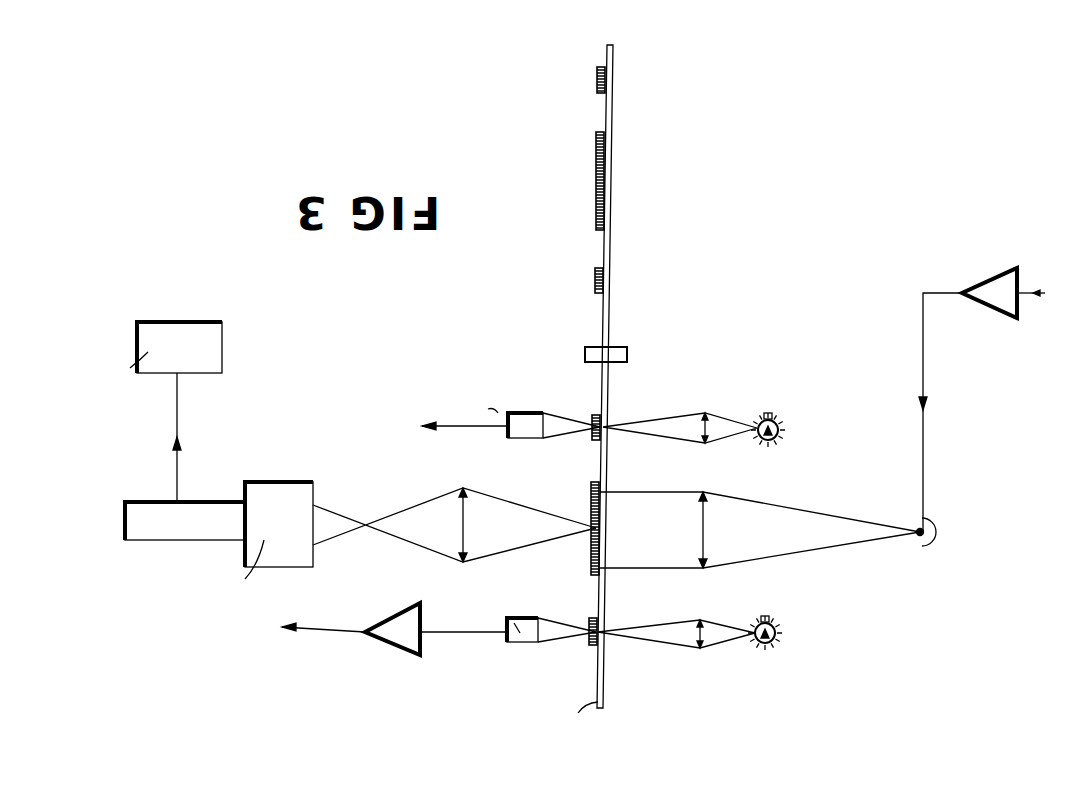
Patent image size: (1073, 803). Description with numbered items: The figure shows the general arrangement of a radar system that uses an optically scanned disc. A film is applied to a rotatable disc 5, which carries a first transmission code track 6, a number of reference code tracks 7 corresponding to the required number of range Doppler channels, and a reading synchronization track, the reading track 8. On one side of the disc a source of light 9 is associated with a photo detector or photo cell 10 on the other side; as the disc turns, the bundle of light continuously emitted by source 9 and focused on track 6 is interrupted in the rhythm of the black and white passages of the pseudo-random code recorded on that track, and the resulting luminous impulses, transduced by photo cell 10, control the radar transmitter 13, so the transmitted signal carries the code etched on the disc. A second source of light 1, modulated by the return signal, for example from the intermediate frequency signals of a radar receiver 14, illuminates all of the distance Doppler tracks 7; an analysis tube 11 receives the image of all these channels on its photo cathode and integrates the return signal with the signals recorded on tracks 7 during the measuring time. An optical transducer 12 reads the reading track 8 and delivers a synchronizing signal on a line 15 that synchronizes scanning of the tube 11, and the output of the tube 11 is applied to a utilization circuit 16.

The source of light 1 is at (919, 535).
The rotatable disc 5 is at (612, 313).
The transmission code track 6 is at (592, 648).
The reference code tracks 7 is at (592, 585).
The reading track 8 is at (592, 415).
The source of light 9 is at (771, 646).
The photo detector 10 is at (497, 644).
The analysis tube 11 is at (282, 565).
The optical transducer 12 is at (520, 432).
The radar transmitter 13 is at (346, 658).
The radar receiver 14 is at (1000, 308).
The line 15 is at (457, 428).
The utilization circuit 16 is at (148, 376).